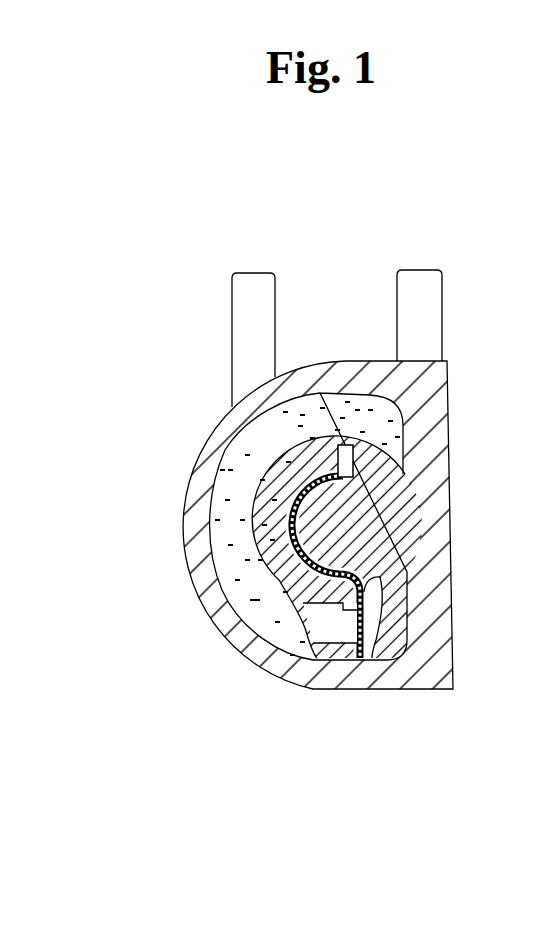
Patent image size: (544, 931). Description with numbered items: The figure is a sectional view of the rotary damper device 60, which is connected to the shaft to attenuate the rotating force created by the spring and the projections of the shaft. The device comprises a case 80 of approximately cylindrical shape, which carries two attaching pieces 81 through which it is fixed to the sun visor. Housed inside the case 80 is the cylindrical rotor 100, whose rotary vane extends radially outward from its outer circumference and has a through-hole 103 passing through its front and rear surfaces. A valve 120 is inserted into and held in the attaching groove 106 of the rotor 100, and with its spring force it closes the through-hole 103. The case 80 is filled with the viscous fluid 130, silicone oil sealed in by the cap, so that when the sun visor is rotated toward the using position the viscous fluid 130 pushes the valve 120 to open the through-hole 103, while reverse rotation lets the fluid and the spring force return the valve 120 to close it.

The rotary damper device 60 is at (150, 128).
The case 80 is at (438, 396).
The attaching pieces 81 is at (250, 278).
The rotor 100 is at (423, 517).
The through-hole 103 is at (322, 628).
The attaching groove 106 is at (293, 483).
The valve 120 is at (367, 628).
The viscous fluid 130 is at (227, 532).